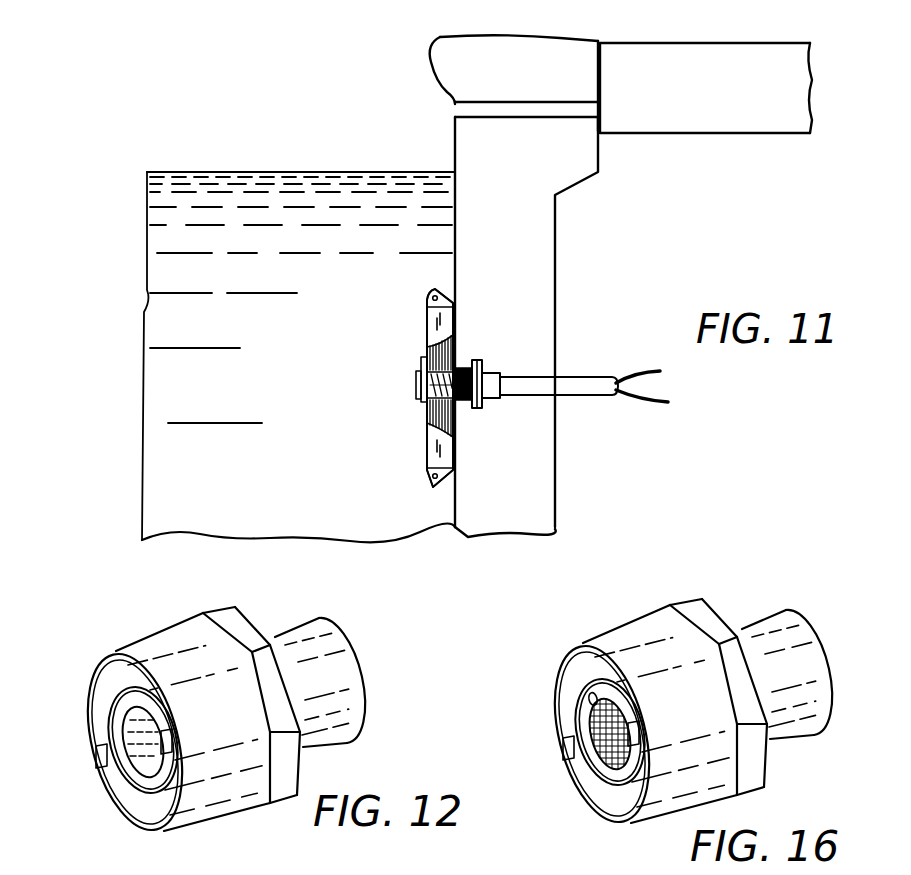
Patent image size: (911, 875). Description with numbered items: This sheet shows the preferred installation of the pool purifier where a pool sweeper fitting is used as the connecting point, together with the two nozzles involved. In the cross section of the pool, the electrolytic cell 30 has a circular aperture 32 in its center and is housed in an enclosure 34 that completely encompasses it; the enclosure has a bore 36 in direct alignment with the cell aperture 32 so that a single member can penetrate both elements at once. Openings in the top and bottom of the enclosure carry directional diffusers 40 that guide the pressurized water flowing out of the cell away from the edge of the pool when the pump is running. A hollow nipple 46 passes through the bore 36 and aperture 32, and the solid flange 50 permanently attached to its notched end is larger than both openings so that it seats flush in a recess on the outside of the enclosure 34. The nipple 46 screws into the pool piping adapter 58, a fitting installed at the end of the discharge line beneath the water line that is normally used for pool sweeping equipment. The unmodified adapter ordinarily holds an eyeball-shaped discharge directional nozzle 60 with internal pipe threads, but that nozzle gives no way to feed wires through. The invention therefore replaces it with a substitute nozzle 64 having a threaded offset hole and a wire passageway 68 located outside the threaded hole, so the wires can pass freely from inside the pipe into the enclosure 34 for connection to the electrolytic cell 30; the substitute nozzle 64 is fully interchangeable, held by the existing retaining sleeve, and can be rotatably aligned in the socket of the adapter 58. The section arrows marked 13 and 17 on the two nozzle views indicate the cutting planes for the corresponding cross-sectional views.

In FIG. 11, the electrolytic cell 30 is at (427, 418).
In FIG. 11, the circular aperture 32 is at (424, 357).
In FIG. 11, the enclosure 34 is at (427, 322).
In FIG. 11, the bore 36 is at (422, 410).
In FIG. 11, the directional diffusers 40 is at (435, 289).
In FIG. 11, the nipple 46 is at (455, 400).
In FIG. 11, the solid flange 50 is at (416, 383).
In FIG. 11, the pool piping adapter 58 is at (482, 362).
In FIG. 12, the pool piping adapter 58 is at (108, 793).
In FIG. 16, the pool piping adapter 58 is at (800, 612).
In FIG. 12, the discharge directional nozzle 60 is at (143, 798).
In FIG. 16, the substitute nozzle 64 is at (610, 793).
In FIG. 16, the wire passageway 68 is at (588, 688).
In FIG. 12, the section line 13- 13 is at (85, 757).
In FIG. 16, the section line 17- 17 is at (555, 752).